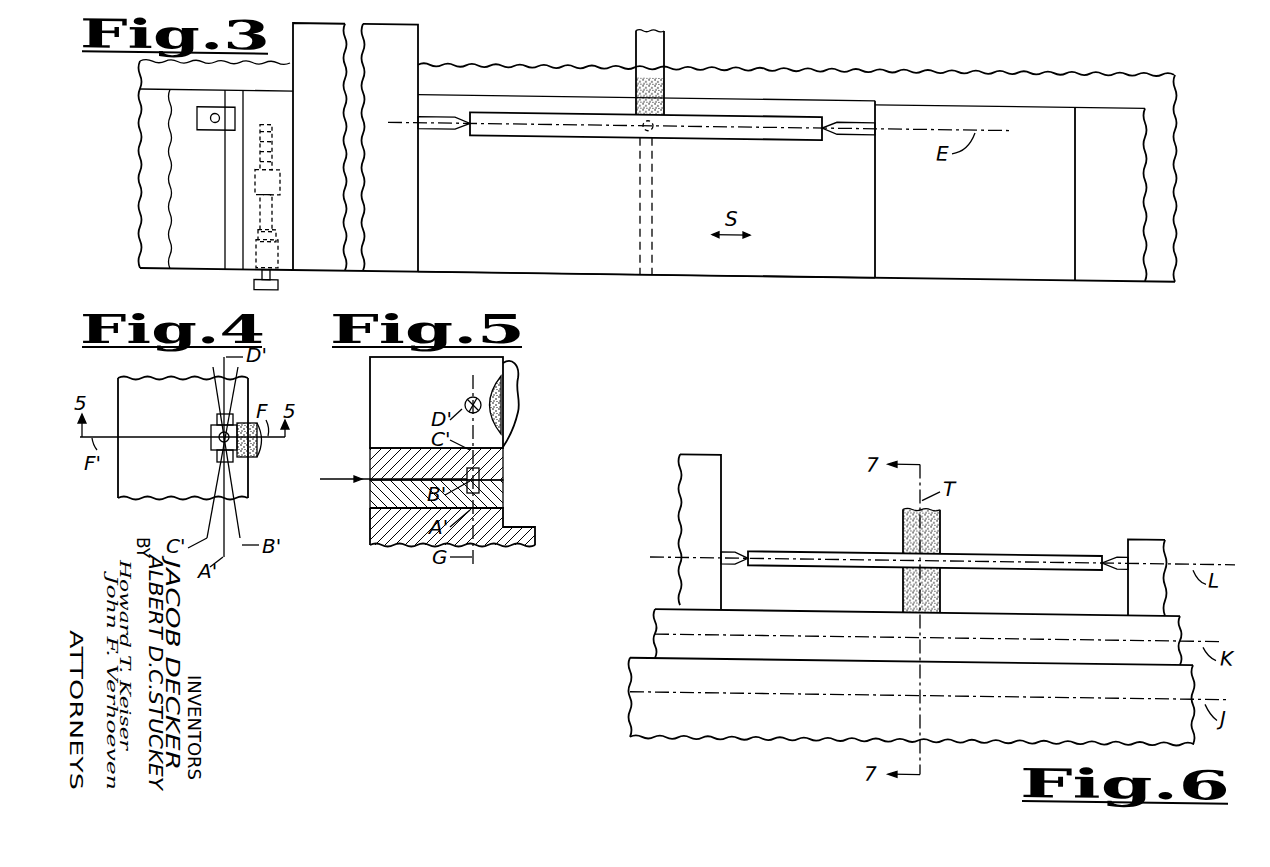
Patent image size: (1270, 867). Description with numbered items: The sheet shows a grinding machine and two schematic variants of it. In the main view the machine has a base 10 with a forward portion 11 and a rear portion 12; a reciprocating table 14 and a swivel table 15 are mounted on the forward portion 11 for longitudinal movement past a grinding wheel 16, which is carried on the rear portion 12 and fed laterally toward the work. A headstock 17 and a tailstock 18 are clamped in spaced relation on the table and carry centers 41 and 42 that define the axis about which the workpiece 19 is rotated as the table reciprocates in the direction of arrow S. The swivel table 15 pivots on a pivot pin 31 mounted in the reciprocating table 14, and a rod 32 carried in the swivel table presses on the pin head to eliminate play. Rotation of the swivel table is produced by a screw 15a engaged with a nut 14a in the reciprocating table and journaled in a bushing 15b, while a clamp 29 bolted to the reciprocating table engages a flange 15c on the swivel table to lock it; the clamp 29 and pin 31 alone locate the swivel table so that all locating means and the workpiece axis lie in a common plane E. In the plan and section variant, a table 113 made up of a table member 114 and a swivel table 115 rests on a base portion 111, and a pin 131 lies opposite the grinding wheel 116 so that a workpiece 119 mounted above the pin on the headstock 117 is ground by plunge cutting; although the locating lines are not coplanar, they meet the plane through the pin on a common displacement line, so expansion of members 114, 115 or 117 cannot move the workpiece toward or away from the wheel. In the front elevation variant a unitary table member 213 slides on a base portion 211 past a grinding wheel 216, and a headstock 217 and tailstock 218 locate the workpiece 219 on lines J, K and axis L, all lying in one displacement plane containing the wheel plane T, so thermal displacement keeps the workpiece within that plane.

In FIG. 3, the base 10 is at (1158, 270).
In FIG. 3, the forward portion 11 is at (150, 198).
In FIG. 3, the rear portion 12 is at (546, 90).
In FIG. 3, the reciprocating table 14 is at (1111, 219).
In FIG. 3, the nut 14a is at (281, 178).
In FIG. 3, the swivel table 15 is at (530, 222).
In FIG. 3, the screw 15a is at (283, 229).
In FIG. 3, the bushing 15b is at (283, 256).
In FIG. 3, the flange 15c is at (225, 243).
In FIG. 3, the grinding wheel 16 is at (666, 38).
In FIG. 3, the headstock 17 is at (326, 221).
In FIG. 3, the tailstock 18 is at (969, 221).
In FIG. 3, the workpiece 19 is at (688, 134).
In FIG. 3, the clamp 29 is at (212, 130).
In FIG. 3, the pivot pin 31 is at (640, 131).
In FIG. 3, the rod 32 is at (655, 168).
In FIG. 3, the headstock center 41 is at (441, 129).
In FIG. 3, the tailstock center 42 is at (848, 128).
In FIG. 5, the base portion 111 is at (370, 522).
In FIG. 4, the table 113 is at (199, 452).
In FIG. 5, the table 113 is at (381, 479).
In FIG. 5, the table member 114 is at (370, 492).
In FIG. 4, the swivel table 115 is at (118, 381).
In FIG. 5, the swivel table 115 is at (370, 458).
In FIG. 4, the grinding wheel 116 is at (259, 446).
In FIG. 5, the grinding wheel 116 is at (523, 420).
In FIG. 5, the headstock 117 is at (370, 398).
In FIG. 4, the workpiece 119 is at (221, 432).
In FIG. 5, the workpiece 119 is at (467, 398).
In FIG. 4, the pin 131 is at (212, 448).
In FIG. 5, the pin 131 is at (465, 476).
In FIG. 6, the base portion 211 is at (985, 657).
In FIG. 6, the table member 213 is at (970, 605).
In FIG. 6, the grinding wheel 216 is at (942, 517).
In FIG. 6, the headstock 217 is at (722, 464).
In FIG. 6, the tailstock 218 is at (1143, 526).
In FIG. 6, the workpiece 219 is at (995, 545).